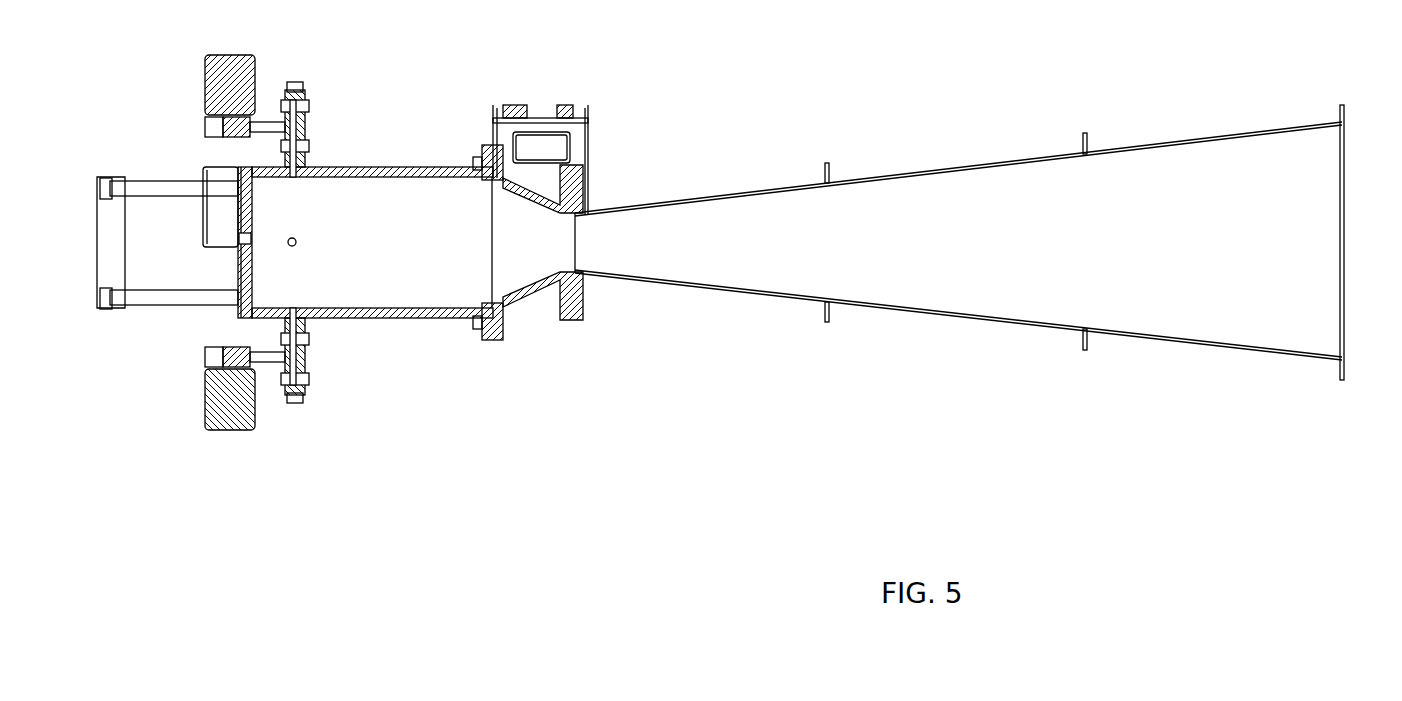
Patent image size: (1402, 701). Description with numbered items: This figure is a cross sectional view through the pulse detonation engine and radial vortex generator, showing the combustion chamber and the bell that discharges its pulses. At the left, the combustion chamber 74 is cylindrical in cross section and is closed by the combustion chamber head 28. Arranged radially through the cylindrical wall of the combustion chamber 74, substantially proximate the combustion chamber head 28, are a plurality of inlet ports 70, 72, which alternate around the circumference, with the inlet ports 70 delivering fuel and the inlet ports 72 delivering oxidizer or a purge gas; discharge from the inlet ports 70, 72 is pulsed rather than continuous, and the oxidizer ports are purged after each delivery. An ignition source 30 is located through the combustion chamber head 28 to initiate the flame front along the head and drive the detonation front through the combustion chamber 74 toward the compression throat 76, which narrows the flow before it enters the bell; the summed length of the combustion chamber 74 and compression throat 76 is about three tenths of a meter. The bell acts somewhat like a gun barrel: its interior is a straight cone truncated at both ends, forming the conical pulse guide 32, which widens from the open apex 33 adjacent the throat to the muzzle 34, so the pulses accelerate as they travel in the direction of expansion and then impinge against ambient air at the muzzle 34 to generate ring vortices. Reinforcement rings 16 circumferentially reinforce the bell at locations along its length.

The reinforcement rings 16 is at (827, 322).
The combustion chamber head 28 is at (242, 297).
The ignition source 30 is at (248, 245).
The conical pulse guide 32 is at (822, 223).
The open apex 33 is at (572, 235).
The muzzle 34 is at (1370, 242).
The inlet ports 70 is at (297, 240).
The inlet ports 72 is at (292, 172).
The combustion chamber 74 is at (387, 258).
The compression throat 76 is at (527, 290).